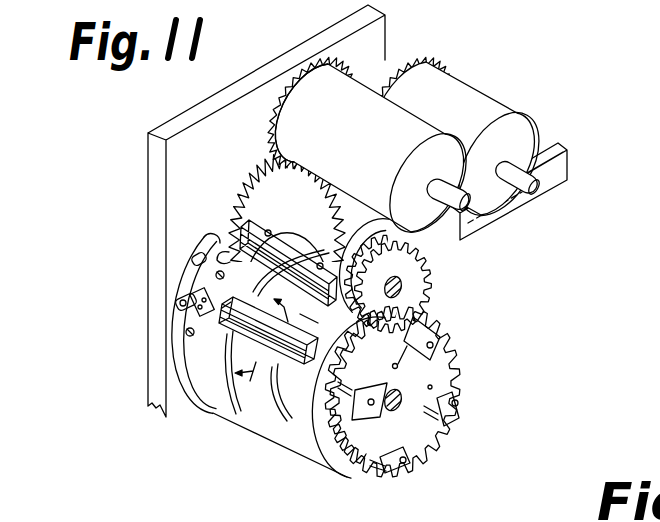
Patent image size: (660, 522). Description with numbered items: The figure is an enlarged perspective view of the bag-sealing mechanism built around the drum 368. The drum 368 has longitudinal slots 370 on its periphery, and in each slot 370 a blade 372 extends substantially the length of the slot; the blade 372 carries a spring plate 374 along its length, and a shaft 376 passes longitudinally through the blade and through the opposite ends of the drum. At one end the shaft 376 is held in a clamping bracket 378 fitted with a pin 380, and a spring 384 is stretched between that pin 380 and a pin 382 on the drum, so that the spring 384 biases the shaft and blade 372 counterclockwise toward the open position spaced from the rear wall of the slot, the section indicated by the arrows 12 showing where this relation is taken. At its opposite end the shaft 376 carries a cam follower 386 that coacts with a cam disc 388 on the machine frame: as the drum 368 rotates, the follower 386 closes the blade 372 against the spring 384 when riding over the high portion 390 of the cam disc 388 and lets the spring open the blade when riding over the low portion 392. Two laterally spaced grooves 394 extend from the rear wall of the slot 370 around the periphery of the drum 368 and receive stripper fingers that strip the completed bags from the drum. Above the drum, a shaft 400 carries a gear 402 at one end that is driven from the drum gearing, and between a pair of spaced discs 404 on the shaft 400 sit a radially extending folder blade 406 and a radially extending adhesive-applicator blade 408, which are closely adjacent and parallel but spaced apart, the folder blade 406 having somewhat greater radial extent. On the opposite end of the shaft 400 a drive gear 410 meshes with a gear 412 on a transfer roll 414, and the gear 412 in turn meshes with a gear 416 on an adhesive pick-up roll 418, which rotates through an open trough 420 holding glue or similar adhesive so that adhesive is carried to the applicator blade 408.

The section line 12 is at (275, 346).
The drum 368 is at (295, 437).
The longitudinal slot 370 is at (242, 305).
The blade 372 is at (230, 305).
The spring plate 374 is at (303, 318).
The shaft 376 is at (170, 316).
The clamping bracket 378 is at (440, 337).
The pin 380 is at (458, 403).
The pin 382 is at (432, 387).
The spring 384 is at (385, 422).
The cam follower 386 is at (190, 266).
The cam disc 388 is at (185, 380).
The high portion 390 is at (195, 253).
The low portion 392 is at (175, 250).
The grooves 394 is at (232, 416).
The shaft 400 is at (402, 282).
The gear 402 is at (410, 298).
The spaced discs 404 is at (373, 237).
The folder blade 406 is at (222, 257).
The adhesive-applicator blade 408 is at (282, 252).
The drive gear 410 is at (265, 158).
The gear 412 is at (308, 100).
The transfer roll 414 is at (300, 92).
The gear 416 is at (423, 58).
The adhesive pick-up roll 418 is at (473, 100).
The open trough 420 is at (557, 172).